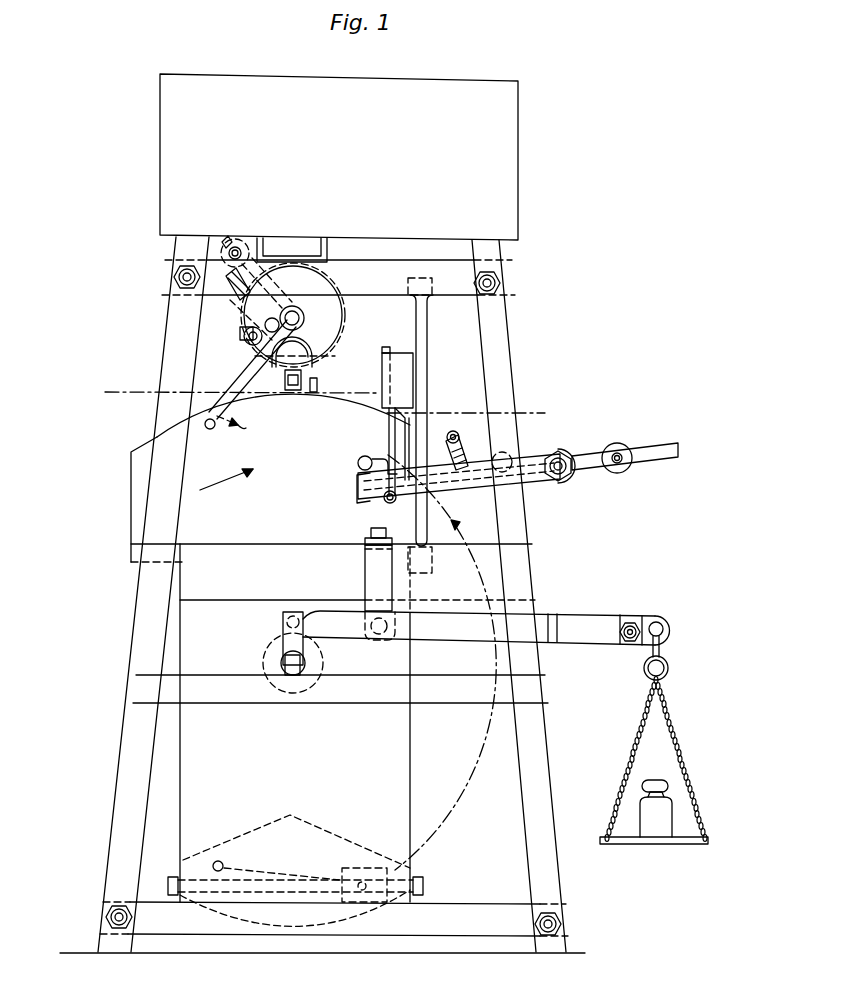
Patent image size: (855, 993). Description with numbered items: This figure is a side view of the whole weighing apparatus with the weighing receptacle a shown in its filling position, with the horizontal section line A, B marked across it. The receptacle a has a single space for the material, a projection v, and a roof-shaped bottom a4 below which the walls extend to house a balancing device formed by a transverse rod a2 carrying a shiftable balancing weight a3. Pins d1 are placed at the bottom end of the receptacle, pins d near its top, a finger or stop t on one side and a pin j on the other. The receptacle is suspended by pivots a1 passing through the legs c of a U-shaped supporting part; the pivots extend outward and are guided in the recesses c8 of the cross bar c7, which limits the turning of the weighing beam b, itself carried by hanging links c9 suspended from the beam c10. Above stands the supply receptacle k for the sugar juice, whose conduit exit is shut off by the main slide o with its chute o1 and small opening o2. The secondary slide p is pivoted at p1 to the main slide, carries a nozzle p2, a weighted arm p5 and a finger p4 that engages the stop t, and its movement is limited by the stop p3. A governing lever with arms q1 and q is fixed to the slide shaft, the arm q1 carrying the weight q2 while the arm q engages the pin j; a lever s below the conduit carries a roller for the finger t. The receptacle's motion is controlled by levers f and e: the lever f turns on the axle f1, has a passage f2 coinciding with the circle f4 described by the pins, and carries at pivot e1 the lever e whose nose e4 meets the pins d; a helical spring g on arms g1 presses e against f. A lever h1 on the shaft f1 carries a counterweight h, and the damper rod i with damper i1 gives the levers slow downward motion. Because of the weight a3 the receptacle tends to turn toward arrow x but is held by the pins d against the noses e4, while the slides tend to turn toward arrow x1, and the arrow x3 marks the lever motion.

The supply receptacle k is at (339, 157).
The weighted arm p5 is at (176, 277).
The projection v is at (134, 492).
The weighing receptacle a is at (295, 691).
The bottom a4 is at (318, 832).
The transverse rod a2 is at (295, 905).
The balancing weight a3 is at (392, 874).
The pins d1 is at (224, 864).
The main slide o is at (305, 316).
The arm of governing lever q1 is at (233, 245).
The weight q2 is at (265, 258).
The secondary slide p is at (246, 318).
The pin j is at (250, 386).
The small opening o2 is at (236, 290).
The finger p4 is at (243, 336).
The nozzle p2 is at (268, 332).
The arm of governing lever q is at (270, 372).
The pivot of secondary slide p1 is at (310, 345).
The stop p3 is at (318, 362).
The chute o1 is at (310, 366).
The lever s is at (292, 393).
The section line A—B A is at (241, 379).
The section line A— B is at (477, 410).
The damper rod i is at (414, 430).
The damper i1 is at (405, 388).
The finger or stop t is at (388, 412).
The lever e is at (420, 485).
The pins d is at (365, 454).
The nose e4 is at (357, 492).
The lever f is at (474, 490).
The passage f2 is at (390, 504).
The helical spring g is at (445, 447).
The arms g1 is at (496, 455).
The pivot of lever e e1 is at (542, 460).
The axle f1 is at (560, 482).
The lever h1 is at (650, 448).
The weight h is at (620, 473).
The arrow x is at (226, 491).
The arrow x1 is at (241, 438).
The direction arrow x3 is at (458, 531).
The circle f4 is at (462, 790).
The hanging links c9 is at (365, 580).
The beam c10 is at (262, 534).
The legs c is at (283, 624).
The recesses c8 is at (306, 662).
The pivots a1 is at (284, 664).
The cross bar c7 is at (248, 695).
The weighing beam b is at (596, 620).